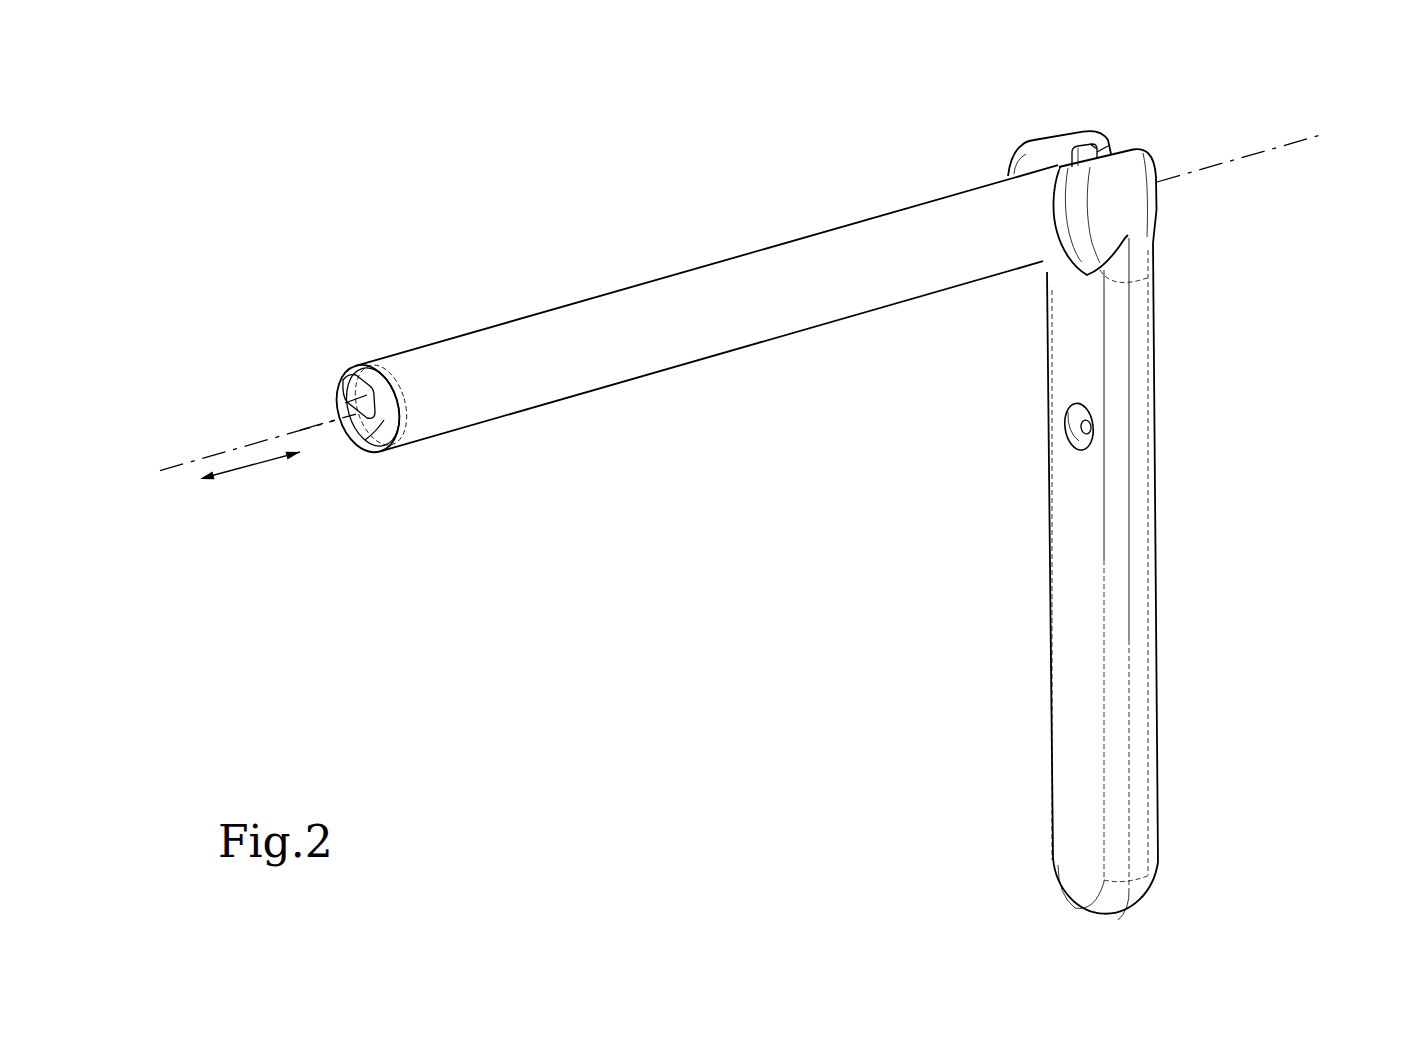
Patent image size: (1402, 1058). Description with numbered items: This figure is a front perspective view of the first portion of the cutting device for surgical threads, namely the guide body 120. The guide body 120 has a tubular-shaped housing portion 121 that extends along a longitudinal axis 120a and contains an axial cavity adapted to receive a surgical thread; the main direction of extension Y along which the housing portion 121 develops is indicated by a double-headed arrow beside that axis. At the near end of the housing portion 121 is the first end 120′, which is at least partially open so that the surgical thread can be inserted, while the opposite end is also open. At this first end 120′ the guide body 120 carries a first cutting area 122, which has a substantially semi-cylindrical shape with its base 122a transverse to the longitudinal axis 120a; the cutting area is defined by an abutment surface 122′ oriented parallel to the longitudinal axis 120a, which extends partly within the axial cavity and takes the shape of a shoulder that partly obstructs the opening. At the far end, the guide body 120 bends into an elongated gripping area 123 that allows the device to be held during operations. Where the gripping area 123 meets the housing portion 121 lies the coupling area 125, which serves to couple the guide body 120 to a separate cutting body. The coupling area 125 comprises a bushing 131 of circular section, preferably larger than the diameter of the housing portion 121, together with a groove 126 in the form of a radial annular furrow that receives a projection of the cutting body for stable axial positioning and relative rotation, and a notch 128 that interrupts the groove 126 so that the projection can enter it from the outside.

The guide body 120 is at (1250, 318).
The first end 120′ is at (353, 370).
The longitudinal axis 120a is at (198, 455).
The housing portion 121 is at (568, 337).
The first cutting area 122 is at (357, 432).
The abutment surface 122′ is at (365, 402).
The base 122a is at (366, 442).
The gripping area 123 is at (1157, 637).
The coupling area 125 is at (1103, 104).
The groove 126 is at (1110, 145).
The notch 128 is at (1052, 153).
The bushing 131 is at (1040, 167).
The main direction of extension Y is at (258, 466).